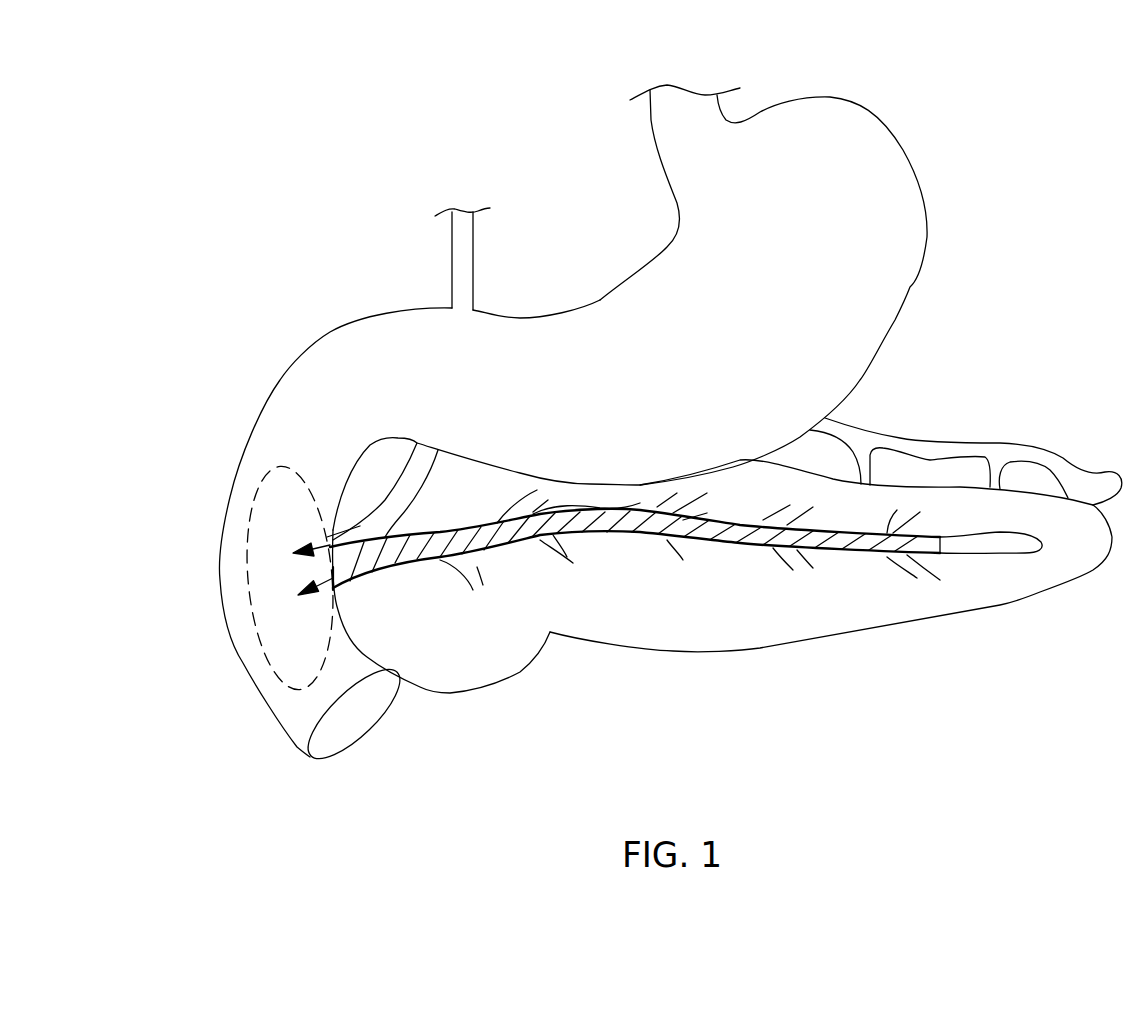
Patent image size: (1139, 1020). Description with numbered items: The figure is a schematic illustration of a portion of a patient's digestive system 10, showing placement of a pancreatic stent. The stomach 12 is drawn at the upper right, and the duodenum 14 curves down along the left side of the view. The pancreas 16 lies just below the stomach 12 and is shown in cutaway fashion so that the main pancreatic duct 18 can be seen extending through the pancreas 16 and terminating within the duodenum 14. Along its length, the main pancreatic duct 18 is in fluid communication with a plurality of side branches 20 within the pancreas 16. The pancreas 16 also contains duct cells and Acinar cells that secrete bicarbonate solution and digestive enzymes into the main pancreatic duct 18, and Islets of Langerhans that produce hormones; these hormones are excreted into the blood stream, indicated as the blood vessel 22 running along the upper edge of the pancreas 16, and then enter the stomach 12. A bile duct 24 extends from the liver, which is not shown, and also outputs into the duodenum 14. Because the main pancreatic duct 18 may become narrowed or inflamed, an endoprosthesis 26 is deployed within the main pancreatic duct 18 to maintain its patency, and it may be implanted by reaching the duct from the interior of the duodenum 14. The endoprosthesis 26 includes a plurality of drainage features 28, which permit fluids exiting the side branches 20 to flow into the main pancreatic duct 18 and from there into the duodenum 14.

The digestive system 10 is at (983, 132).
The stomach 12 is at (811, 245).
The duodenum 14 is at (283, 427).
The pancreas 16 is at (1005, 592).
The main pancreatic duct 18 is at (503, 545).
The side branches 20 is at (653, 538).
The blood vessel 22 is at (1000, 448).
The bile duct 24 is at (452, 253).
The endoprosthesis 26 is at (760, 548).
The drainage features 28 is at (700, 547).